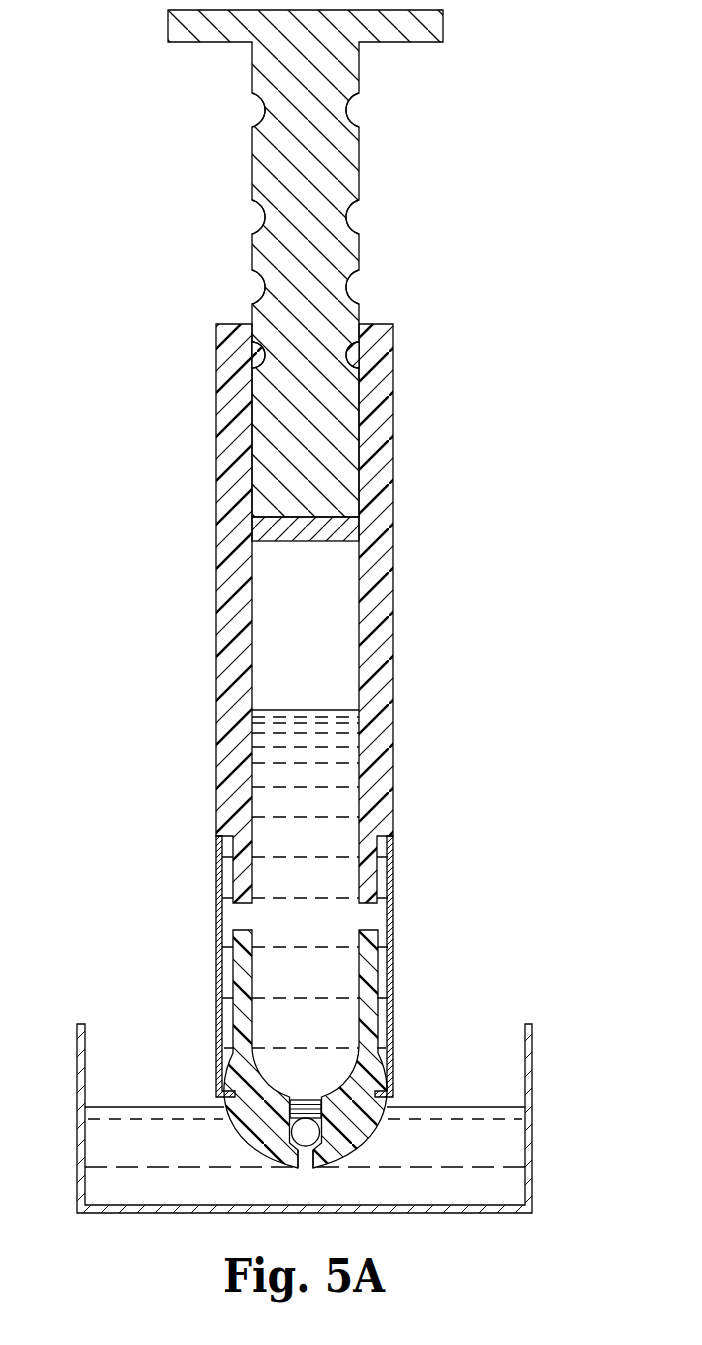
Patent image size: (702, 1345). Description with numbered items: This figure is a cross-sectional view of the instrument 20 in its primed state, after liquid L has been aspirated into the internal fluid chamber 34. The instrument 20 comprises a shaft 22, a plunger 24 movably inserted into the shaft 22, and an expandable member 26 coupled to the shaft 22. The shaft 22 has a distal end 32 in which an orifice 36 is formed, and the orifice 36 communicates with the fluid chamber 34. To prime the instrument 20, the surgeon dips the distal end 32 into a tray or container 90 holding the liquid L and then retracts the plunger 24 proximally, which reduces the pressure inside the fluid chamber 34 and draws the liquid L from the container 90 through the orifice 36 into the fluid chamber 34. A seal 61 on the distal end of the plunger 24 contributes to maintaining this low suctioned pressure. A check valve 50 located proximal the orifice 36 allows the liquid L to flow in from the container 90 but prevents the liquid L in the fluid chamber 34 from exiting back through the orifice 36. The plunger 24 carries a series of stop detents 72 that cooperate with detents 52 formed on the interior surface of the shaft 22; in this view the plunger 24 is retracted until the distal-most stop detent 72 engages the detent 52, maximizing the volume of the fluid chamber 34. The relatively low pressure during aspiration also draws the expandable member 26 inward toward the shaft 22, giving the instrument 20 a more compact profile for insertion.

The instrument 20 is at (112, 256).
The shaft 22 is at (226, 587).
The plunger 24 is at (352, 153).
The expandable member 26 is at (217, 984).
The distal end 32 is at (297, 1168).
The fluid chamber 34 is at (317, 617).
The orifice 36 is at (313, 1166).
The check valve 50 is at (345, 1110).
The detents 52 is at (263, 350).
The seal 61 is at (335, 529).
The stop detents 72 is at (348, 209).
The container 90 is at (531, 1053).
The liquid L is at (322, 710).